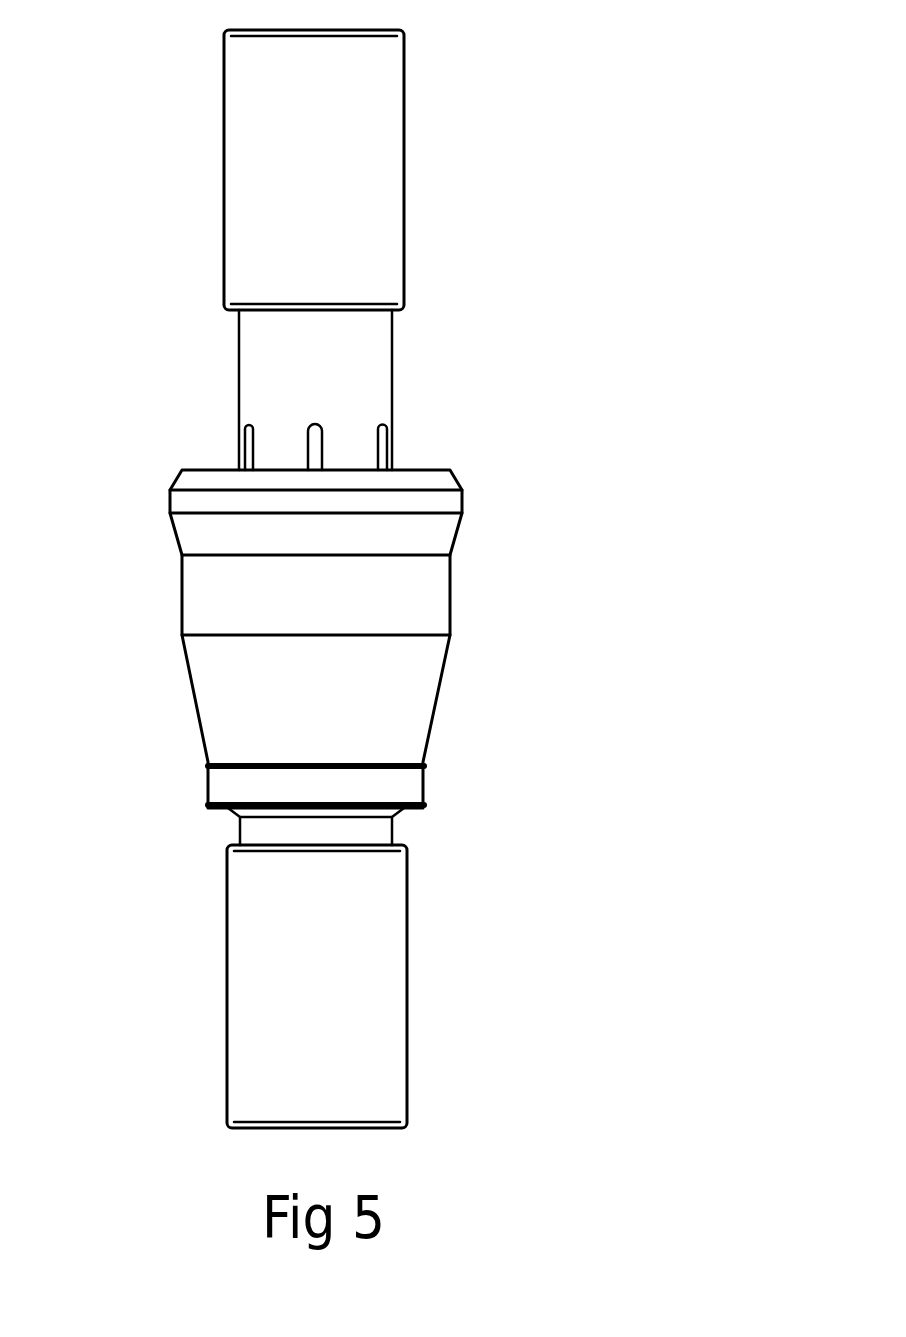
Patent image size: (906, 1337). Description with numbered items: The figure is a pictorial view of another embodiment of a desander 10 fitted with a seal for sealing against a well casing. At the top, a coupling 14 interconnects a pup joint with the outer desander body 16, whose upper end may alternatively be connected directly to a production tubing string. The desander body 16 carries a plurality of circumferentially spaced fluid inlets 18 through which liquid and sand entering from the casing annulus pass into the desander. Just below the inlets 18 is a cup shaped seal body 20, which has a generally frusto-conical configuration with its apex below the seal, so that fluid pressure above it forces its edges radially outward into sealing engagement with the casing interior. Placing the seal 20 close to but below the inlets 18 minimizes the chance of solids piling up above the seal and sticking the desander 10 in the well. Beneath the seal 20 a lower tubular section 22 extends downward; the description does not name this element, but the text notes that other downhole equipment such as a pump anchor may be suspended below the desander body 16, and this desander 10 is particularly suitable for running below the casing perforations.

The desander 10 is at (568, 623).
The coupling 14 is at (360, 180).
The desander body 16 is at (290, 365).
The fluid inlets 18 is at (387, 447).
The cup shaped seal body 20 is at (245, 662).
The lower cylindrical housing 22 is at (362, 1000).